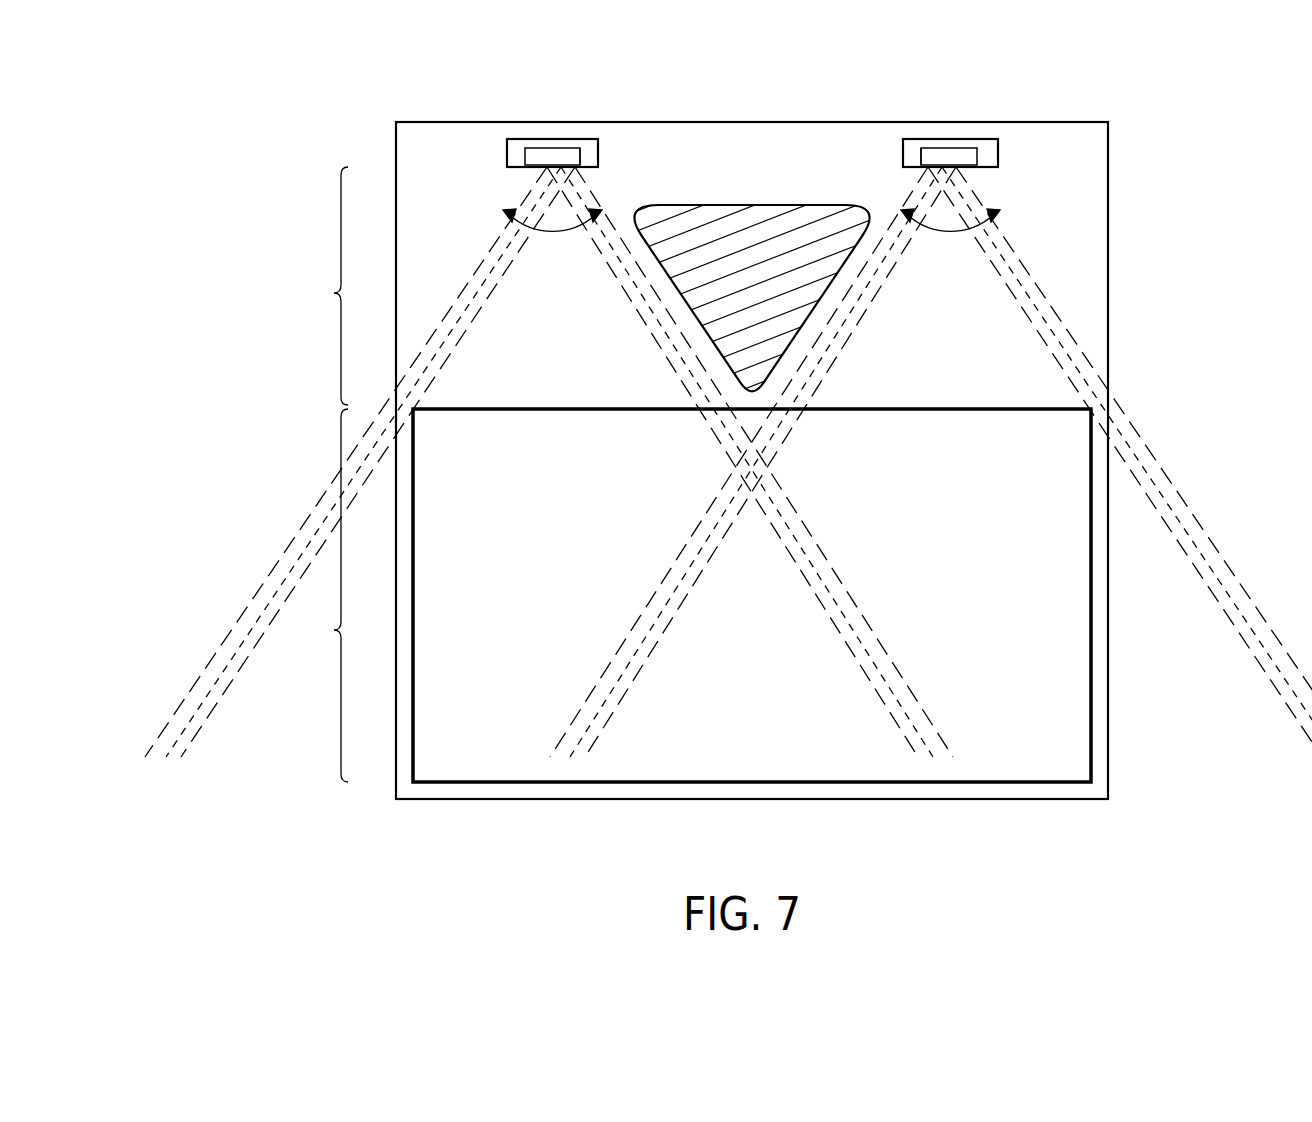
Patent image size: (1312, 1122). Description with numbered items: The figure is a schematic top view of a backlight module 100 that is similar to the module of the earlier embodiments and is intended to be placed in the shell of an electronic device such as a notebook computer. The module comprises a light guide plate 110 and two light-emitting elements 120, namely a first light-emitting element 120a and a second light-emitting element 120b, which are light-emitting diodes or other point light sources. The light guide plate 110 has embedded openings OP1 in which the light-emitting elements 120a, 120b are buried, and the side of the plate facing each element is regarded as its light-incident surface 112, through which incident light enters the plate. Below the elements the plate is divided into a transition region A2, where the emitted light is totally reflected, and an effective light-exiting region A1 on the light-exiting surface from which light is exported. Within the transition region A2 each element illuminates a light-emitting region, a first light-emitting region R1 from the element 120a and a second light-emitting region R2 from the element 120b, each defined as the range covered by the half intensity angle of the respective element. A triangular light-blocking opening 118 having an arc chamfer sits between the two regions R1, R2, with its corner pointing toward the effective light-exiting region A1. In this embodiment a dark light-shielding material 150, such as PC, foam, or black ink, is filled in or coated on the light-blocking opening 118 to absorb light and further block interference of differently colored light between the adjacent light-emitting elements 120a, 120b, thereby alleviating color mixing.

The backlight module 100 is at (1141, 62).
The light guide plate 110 is at (1110, 222).
The light-incident surface 112 is at (592, 164).
The light-blocking opening 118 is at (750, 262).
The light-emitting elements 120 is at (751, 113).
The light-emitting element 120a is at (552, 148).
The light-emitting element 120b is at (950, 148).
The light-shielding material 150 is at (800, 217).
The embedded openings OP1 is at (507, 153).
The light-emitting region R1 is at (592, 292).
The light-emitting region R2 is at (1000, 351).
The effective light-exiting region A1 is at (321, 595).
The transition region A2 is at (321, 286).